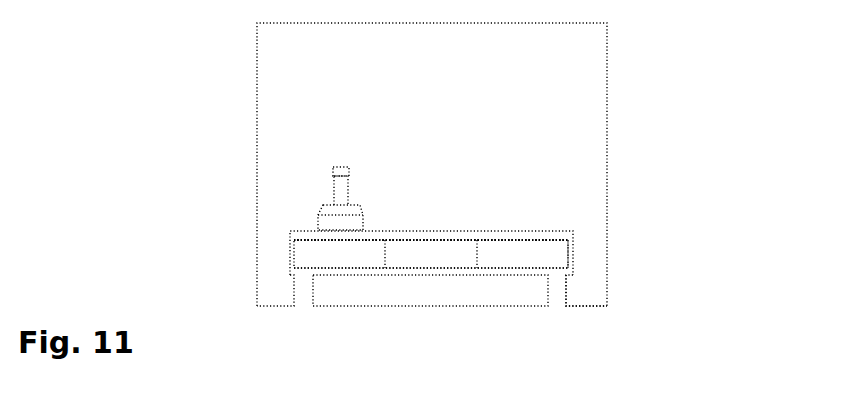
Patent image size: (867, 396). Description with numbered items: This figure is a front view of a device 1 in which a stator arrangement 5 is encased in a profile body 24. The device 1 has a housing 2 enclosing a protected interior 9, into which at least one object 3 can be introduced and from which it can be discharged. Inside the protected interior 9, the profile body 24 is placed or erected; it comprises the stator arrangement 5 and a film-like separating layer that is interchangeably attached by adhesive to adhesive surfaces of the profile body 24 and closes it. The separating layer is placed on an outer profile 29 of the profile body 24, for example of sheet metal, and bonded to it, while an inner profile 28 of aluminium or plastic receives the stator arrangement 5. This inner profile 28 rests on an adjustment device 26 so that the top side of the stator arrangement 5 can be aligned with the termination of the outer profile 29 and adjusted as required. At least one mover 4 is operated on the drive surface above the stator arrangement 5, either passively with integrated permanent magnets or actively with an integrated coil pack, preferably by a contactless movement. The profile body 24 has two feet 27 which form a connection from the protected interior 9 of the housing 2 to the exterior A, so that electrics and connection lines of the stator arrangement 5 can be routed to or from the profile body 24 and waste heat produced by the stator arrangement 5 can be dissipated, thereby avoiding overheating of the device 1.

The device 1 is at (495, 153).
The protected interior 9 is at (568, 100).
The housing 2 is at (485, 237).
The object 3 is at (338, 189).
The mover 4 is at (333, 225).
The stator arrangement 5 is at (298, 257).
The profile body 24 is at (592, 260).
The adjustment device 26 is at (374, 283).
The feet 27 is at (558, 295).
The inner profile 28 is at (507, 270).
The outer profile 29 is at (568, 248).
The exterior A is at (163, 212).